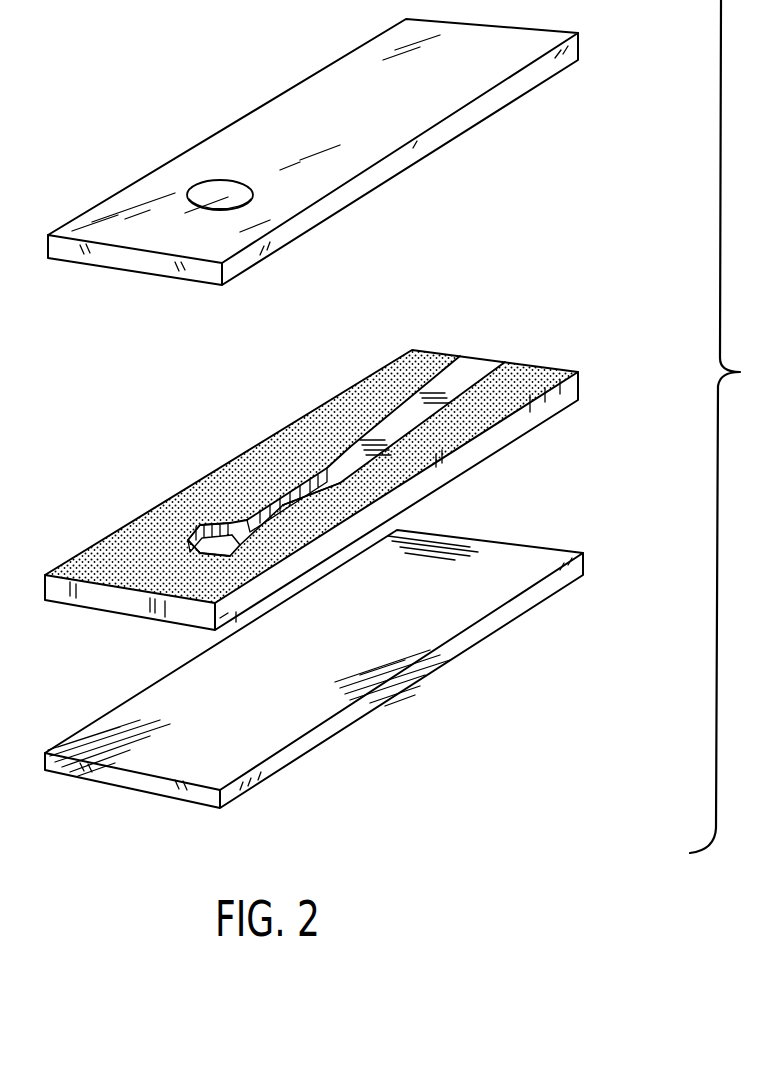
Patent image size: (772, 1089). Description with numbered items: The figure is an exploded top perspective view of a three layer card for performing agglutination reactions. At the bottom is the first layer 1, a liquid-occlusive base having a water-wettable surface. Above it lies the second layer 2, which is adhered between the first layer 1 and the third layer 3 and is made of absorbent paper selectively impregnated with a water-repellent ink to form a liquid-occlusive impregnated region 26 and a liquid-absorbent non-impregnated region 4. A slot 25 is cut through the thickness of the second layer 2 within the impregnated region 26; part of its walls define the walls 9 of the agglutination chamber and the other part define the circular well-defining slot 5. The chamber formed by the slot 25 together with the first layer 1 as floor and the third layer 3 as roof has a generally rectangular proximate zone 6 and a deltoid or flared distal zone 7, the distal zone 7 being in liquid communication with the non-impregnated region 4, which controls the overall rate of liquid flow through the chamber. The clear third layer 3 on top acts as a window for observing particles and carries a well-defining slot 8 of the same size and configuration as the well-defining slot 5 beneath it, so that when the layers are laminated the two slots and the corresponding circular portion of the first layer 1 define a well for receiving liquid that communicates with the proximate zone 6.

The first layer 1 is at (500, 592).
The second layer 2 is at (583, 397).
The third layer 3 is at (510, 63).
The non-impregnated region 4 is at (483, 368).
The well-defining slot 5 is at (192, 550).
The proximate zone 6 is at (212, 517).
The distal zone 7 is at (280, 500).
The well-defining slot 8 is at (216, 198).
The walls 9 is at (230, 497).
The slot 25 is at (310, 496).
The impregnated region 26 is at (380, 383).